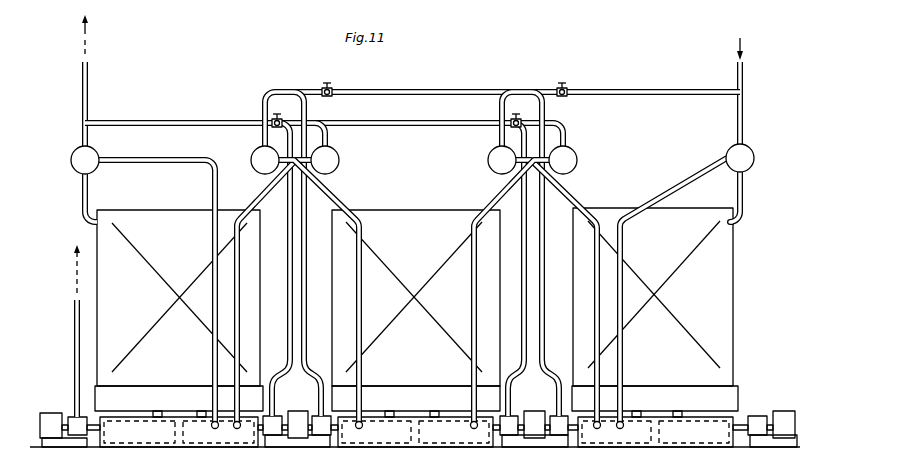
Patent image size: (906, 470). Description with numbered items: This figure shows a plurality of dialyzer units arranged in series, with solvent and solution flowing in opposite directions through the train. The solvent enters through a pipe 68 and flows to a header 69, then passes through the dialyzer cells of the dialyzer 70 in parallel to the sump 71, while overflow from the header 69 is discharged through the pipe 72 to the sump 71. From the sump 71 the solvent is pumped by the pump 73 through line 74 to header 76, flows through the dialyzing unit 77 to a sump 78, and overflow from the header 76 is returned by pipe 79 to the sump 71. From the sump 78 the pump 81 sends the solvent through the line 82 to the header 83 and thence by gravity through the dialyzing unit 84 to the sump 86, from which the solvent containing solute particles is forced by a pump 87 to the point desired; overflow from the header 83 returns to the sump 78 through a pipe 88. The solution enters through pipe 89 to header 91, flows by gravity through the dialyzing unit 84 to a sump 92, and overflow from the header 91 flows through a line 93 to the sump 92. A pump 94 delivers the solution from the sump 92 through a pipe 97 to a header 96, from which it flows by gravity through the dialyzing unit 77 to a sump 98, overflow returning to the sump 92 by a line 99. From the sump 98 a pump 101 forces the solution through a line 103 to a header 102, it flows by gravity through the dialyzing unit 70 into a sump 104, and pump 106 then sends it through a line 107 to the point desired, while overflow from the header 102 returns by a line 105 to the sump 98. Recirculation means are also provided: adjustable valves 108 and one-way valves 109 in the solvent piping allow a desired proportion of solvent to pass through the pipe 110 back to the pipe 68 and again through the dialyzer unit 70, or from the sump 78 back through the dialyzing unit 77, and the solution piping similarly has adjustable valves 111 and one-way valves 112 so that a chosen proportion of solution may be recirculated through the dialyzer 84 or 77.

The pipe 68 is at (82, 77).
The header 69 is at (80, 170).
The dialyzer 70 is at (161, 220).
The sump 71 is at (228, 436).
The pipe 72 is at (212, 238).
The pump 73 is at (297, 411).
The line 74 is at (288, 278).
The header 76 is at (330, 161).
The dialyzing unit 77 is at (416, 212).
The sump 78 is at (462, 436).
The pipe 79 is at (258, 204).
The pump 81 is at (512, 436).
The line 82 is at (523, 240).
The header 83 is at (572, 153).
The dialyzing unit 84 is at (697, 212).
The sump 86 is at (717, 436).
The pump 87 is at (756, 436).
The pipe 88 is at (472, 238).
The pipe 89 is at (744, 84).
The header 91 is at (750, 156).
The sump 92 is at (637, 436).
The line 93 is at (659, 207).
The pump 94 is at (561, 436).
The header 96 is at (498, 159).
The pipe 97 is at (545, 290).
The sump 98 is at (395, 436).
The line 99 is at (575, 202).
The pump 101 is at (326, 440).
The header 102 is at (260, 161).
The line 103 is at (307, 264).
The sump 104 is at (120, 433).
The line 105 is at (360, 265).
The pump 106 is at (73, 416).
The line 107 is at (73, 356).
The adjustable valve 108 is at (286, 112).
The one-way valve 109 is at (223, 121).
The pipe 110 is at (236, 121).
The adjustable valve 111 is at (332, 88).
The one-way valve 112 is at (499, 91).